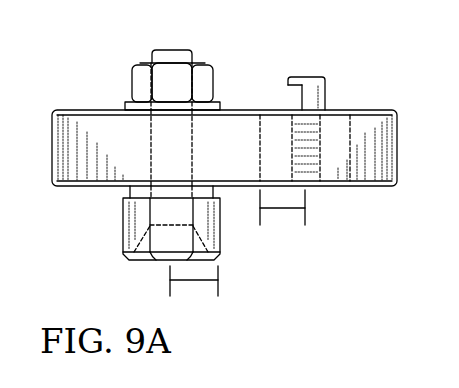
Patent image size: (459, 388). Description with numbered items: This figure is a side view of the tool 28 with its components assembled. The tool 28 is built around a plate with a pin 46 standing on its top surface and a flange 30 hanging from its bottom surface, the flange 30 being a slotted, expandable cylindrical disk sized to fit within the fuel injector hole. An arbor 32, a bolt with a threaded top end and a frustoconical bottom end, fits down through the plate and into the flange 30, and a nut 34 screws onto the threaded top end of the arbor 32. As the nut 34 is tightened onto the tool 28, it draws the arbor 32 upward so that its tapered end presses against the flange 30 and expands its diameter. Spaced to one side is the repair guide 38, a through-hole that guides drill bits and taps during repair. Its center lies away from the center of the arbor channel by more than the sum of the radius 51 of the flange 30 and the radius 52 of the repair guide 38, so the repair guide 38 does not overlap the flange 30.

The tool 28 is at (350, 94).
The flange 30 is at (110, 228).
The arbor 32 is at (174, 49).
The nut 34 is at (116, 89).
The repair guide 38 is at (305, 186).
The pin 46 is at (296, 103).
The radius of flange 51 is at (200, 280).
The radius of repair guide 52 is at (285, 208).